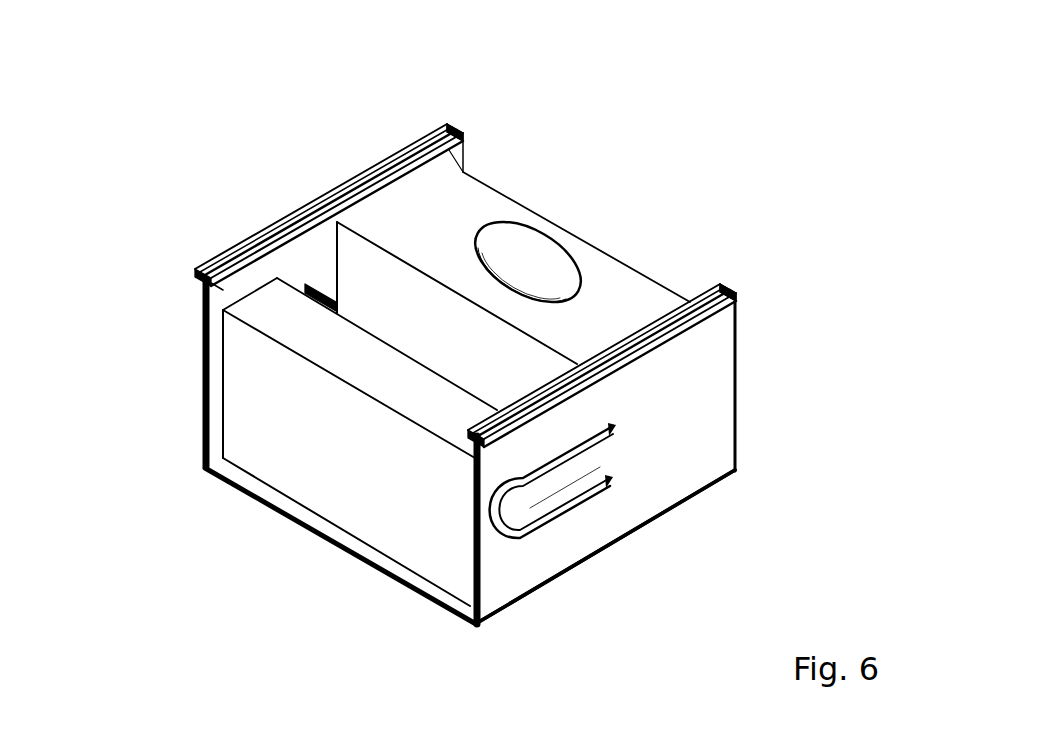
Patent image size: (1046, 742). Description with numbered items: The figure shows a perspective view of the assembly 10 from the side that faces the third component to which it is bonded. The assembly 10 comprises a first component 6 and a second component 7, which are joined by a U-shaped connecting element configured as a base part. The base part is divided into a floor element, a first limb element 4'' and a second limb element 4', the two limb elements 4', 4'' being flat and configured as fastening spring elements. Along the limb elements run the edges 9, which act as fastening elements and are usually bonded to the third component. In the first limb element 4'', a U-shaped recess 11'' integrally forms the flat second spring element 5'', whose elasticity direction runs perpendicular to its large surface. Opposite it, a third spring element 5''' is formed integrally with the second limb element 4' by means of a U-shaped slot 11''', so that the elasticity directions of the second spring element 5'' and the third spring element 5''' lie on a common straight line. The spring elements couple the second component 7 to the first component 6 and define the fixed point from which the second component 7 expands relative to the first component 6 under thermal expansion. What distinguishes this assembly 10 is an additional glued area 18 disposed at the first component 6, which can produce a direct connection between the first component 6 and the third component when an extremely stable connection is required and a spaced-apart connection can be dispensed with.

The assembly 10 is at (758, 64).
The edge 9 is at (390, 157).
The glued area 18 is at (458, 136).
The first component 6 is at (607, 285).
The second component 7 is at (358, 435).
The second limb element 4' is at (130, 373).
The first limb element 4'' is at (651, 462).
The second spring element 5'' is at (559, 539).
The U-shaped recess 11'' is at (628, 537).
The third spring element 5''' is at (294, 199).
The U-shaped slot 11''' is at (216, 203).